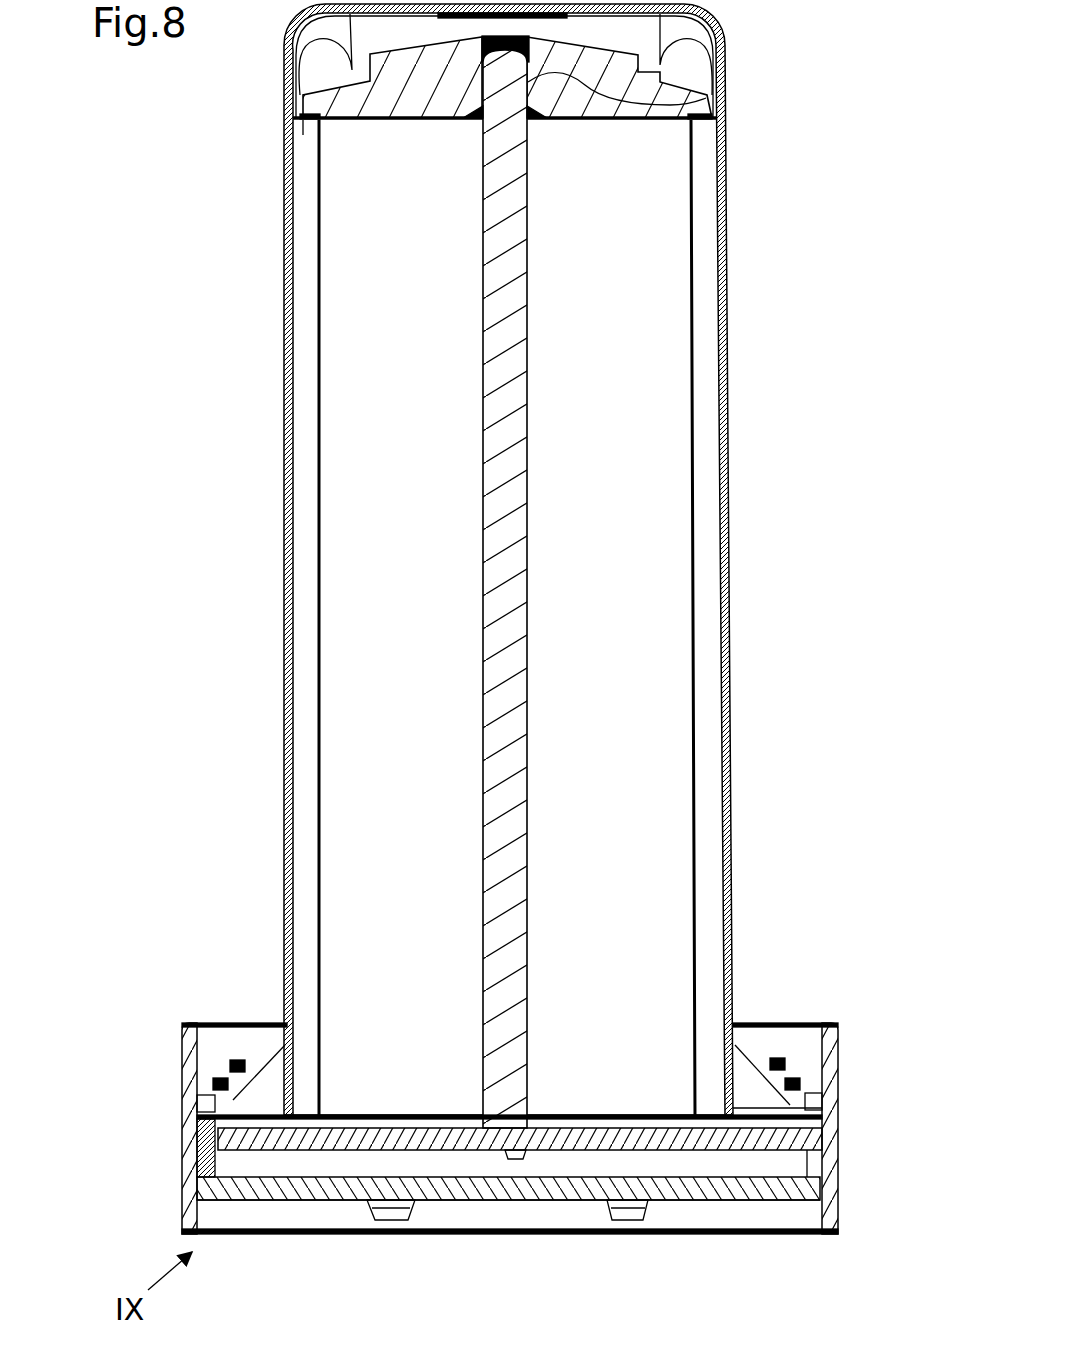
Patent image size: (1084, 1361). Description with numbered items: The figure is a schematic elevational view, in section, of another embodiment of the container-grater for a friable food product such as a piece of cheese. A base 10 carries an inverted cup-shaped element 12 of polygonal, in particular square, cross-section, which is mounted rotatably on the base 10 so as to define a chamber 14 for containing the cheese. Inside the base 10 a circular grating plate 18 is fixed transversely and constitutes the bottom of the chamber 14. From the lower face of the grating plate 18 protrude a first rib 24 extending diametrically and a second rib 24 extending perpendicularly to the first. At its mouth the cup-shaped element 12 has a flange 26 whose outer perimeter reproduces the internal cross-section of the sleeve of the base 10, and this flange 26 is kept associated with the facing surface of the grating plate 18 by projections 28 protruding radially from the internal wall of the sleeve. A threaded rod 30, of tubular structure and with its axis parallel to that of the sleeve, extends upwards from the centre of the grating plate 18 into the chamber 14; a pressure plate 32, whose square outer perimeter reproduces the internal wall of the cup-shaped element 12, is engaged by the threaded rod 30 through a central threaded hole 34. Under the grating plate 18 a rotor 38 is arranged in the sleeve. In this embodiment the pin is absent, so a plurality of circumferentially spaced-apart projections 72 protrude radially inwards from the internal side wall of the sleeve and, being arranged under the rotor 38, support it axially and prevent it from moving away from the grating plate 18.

The base 10 is at (848, 1124).
The inverted cup-shaped element 12 is at (738, 332).
The chamber 14 is at (610, 754).
The grating plate 18 is at (287, 1145).
The rib 24 is at (580, 1162).
The flange 26 is at (768, 1110).
The projections 28 is at (228, 1060).
The threaded rod 30 is at (527, 487).
The pressure plate 32 is at (622, 108).
The threaded hole 34 is at (703, 84).
The rotor 38 is at (740, 1212).
The projections 72 is at (402, 1215).